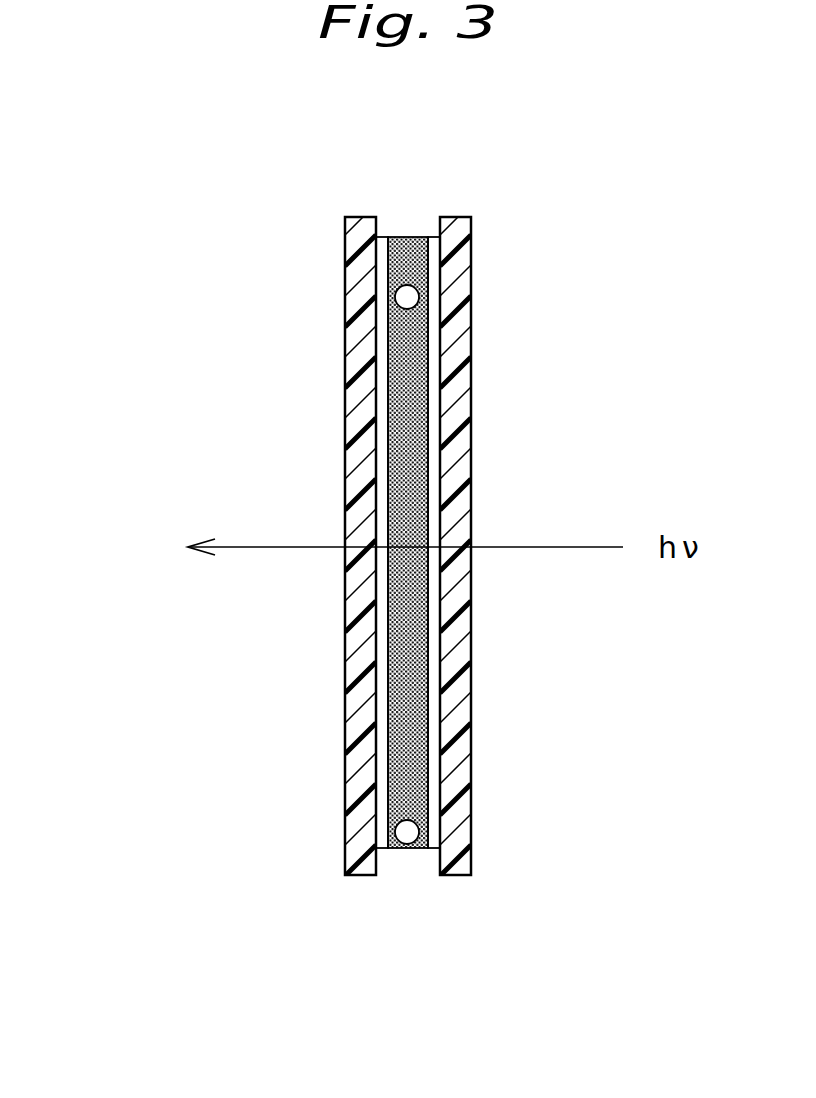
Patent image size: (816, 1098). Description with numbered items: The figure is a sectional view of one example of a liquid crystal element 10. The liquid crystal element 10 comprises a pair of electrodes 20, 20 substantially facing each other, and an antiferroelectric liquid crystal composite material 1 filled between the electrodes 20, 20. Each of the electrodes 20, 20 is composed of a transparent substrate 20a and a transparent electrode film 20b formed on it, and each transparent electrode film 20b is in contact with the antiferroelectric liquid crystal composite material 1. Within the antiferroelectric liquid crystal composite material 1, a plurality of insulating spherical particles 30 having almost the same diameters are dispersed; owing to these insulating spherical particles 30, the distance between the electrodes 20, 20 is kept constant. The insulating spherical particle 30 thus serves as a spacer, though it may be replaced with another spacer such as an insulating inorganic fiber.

The antiferroelectric liquid crystal composite material 1 is at (412, 237).
The liquid crystal element 10 is at (291, 589).
The electrode 20 is at (404, 592).
The transparent substrate 20a is at (382, 850).
The transparent electrode film 20b is at (360, 877).
The insulating spherical particle 30 is at (405, 298).